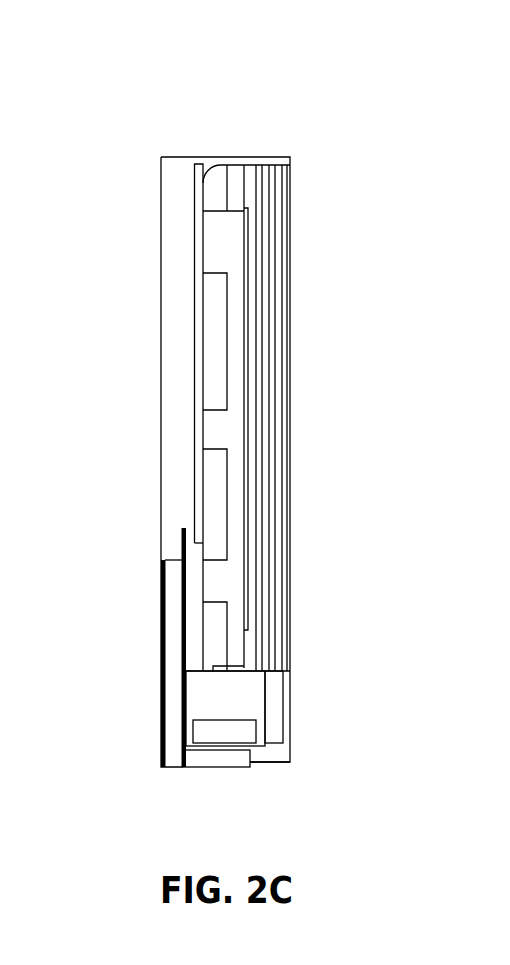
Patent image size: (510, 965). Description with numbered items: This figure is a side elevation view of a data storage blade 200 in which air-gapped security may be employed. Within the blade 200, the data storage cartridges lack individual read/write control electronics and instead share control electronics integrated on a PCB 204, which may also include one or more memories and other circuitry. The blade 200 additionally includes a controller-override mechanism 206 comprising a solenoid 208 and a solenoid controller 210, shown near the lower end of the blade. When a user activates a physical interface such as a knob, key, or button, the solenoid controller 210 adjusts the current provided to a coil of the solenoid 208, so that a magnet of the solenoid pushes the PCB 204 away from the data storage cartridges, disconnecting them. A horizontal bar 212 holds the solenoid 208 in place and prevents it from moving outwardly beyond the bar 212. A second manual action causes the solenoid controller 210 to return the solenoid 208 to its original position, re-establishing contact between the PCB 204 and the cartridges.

The data storage blade 200 is at (82, 91).
The PCB 204 is at (182, 541).
The controller-override mechanism 206 is at (293, 773).
The solenoid 208 is at (210, 693).
The solenoid controller 210 is at (243, 732).
The horizontal bar 212 is at (270, 708).